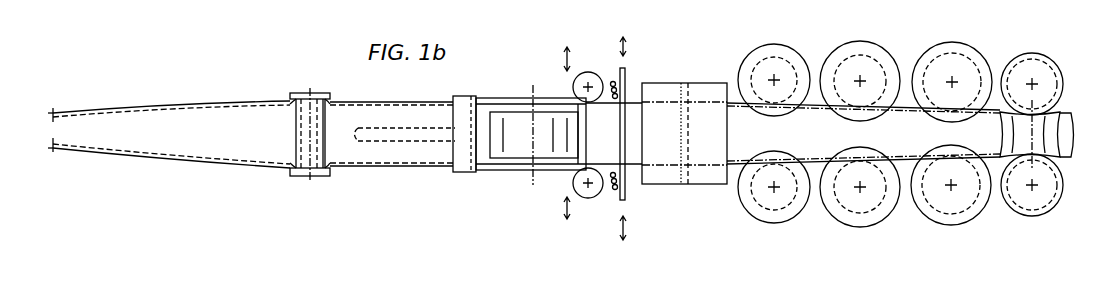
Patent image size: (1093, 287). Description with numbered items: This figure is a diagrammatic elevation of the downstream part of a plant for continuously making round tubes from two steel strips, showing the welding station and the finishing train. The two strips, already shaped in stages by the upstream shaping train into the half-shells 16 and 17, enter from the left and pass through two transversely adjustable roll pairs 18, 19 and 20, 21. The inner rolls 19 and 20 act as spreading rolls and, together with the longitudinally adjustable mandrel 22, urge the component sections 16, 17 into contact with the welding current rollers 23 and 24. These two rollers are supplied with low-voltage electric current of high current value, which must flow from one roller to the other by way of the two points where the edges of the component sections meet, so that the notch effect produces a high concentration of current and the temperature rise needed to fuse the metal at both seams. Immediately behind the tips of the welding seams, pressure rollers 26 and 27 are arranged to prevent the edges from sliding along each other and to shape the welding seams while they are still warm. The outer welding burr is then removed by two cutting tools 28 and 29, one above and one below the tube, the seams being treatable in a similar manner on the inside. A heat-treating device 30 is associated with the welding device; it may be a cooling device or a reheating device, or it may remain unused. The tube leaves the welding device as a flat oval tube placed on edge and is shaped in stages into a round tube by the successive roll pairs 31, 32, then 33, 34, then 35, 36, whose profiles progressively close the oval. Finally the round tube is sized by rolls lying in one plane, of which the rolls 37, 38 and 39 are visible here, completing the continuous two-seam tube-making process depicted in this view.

The half-shell 16 is at (96, 151).
The half-shell 17 is at (169, 153).
The roll of roll pair 18 is at (291, 173).
The inner spreading roll 19 is at (292, 107).
The inner spreading roll 20 is at (310, 134).
The roll of roll pair 21 is at (310, 133).
The longitudinally adjustable mandrel 22 is at (455, 172).
The welding current roller 23 is at (534, 135).
The welding current roller 24 is at (516, 152).
The pressure roller 26 is at (588, 198).
The pressure roller 27 is at (588, 72).
The cutting tool 28 is at (625, 195).
The cutting tool 29 is at (626, 73).
The heat-treating device 30 is at (673, 183).
The roll of roll pair 31 is at (757, 54).
The roll of roll pair 32 is at (753, 213).
The roll of roll pair 33 is at (838, 55).
The roll of roll pair 34 is at (834, 214).
The roll of roll pair 35 is at (927, 57).
The roll of roll pair 36 is at (928, 212).
The sizing roll 37 is at (1021, 61).
The sizing roll 38 is at (1019, 205).
The sizing roll 39 is at (1005, 135).